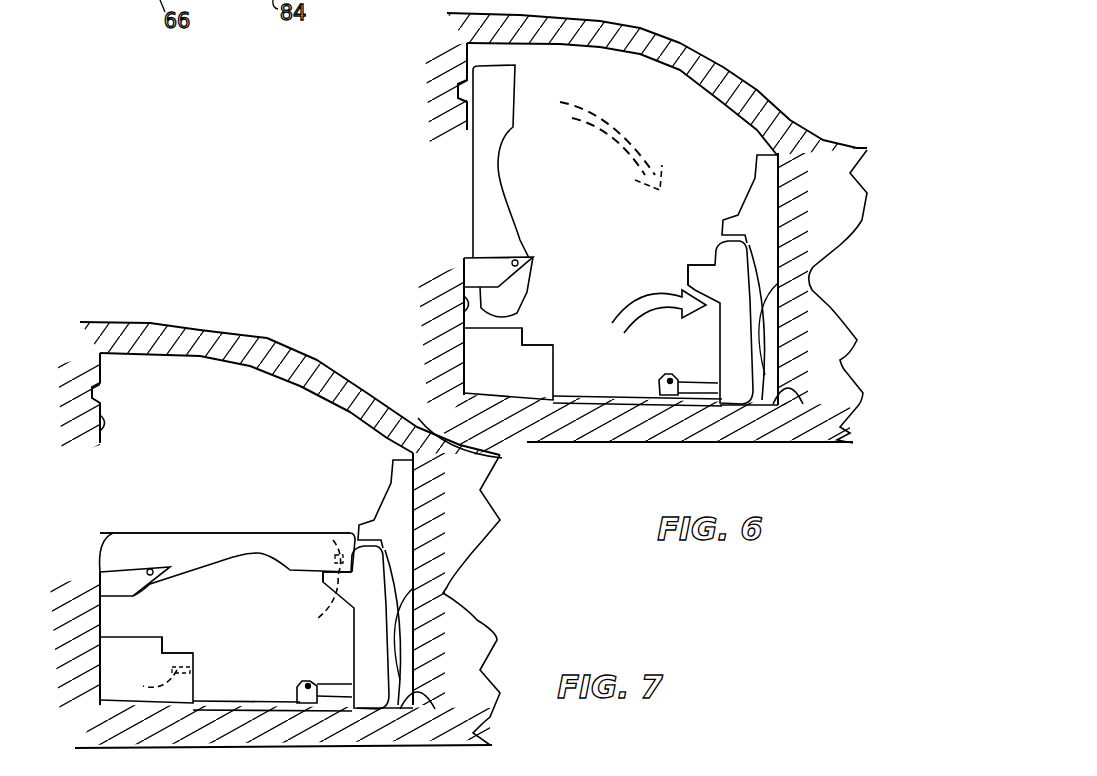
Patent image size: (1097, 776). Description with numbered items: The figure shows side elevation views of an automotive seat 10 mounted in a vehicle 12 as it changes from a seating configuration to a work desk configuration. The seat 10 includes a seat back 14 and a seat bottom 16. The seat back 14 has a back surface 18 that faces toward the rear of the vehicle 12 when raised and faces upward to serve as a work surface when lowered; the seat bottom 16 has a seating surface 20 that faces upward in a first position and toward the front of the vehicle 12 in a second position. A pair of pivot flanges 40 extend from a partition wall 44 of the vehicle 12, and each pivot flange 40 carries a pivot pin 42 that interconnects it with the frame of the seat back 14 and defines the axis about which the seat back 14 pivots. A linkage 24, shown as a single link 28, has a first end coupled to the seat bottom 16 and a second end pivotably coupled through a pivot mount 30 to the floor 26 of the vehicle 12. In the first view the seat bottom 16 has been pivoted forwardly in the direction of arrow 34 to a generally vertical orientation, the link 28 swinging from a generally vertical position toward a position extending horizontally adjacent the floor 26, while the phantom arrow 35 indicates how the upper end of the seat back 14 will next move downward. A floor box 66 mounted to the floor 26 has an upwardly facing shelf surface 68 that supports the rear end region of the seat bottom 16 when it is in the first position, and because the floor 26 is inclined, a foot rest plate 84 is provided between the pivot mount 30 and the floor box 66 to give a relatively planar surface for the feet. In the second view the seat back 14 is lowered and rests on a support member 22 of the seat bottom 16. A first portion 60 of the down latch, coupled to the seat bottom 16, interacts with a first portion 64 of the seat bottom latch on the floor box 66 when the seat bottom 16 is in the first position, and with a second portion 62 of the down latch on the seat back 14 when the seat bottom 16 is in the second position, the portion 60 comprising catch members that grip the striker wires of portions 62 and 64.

In FIG. 6, the automotive seat 10 is at (526, 96).
In FIG. 7, the automotive seat 10 is at (231, 514).
In FIG. 6, the vehicle 12 is at (747, 82).
In FIG. 7, the vehicle 12 is at (147, 328).
In FIG. 6, the seat back 14 is at (511, 206).
In FIG. 7, the seat back 14 is at (275, 532).
In FIG. 6, the seat bottom 16 is at (737, 330).
In FIG. 7, the seat bottom 16 is at (365, 656).
In FIG. 6, the back surface 18 is at (473, 188).
In FIG. 7, the back surface 18 is at (193, 532).
In FIG. 6, the seating surface 20 is at (783, 360).
In FIG. 7, the seating surface 20 is at (395, 642).
In FIG. 6, the support member 22 is at (686, 270).
In FIG. 7, the support member 22 is at (321, 582).
In FIG. 6, the linkage 24 is at (662, 370).
In FIG. 6, the floor 26 is at (790, 406).
In FIG. 7, the floor 26 is at (447, 707).
In FIG. 6, the link 28 is at (702, 372).
In FIG. 7, the link 28 is at (342, 683).
In FIG. 6, the pivot mount 30 is at (658, 380).
In FIG. 7, the pivot mount 30 is at (300, 683).
In FIG. 6, the arrow 34 is at (632, 318).
In FIG. 6, the phantom arrow 35 is at (623, 130).
In FIG. 6, the pivot flange 40 is at (495, 268).
In FIG. 7, the pivot flange 40 is at (122, 577).
In FIG. 6, the pivot pin 42 is at (518, 260).
In FIG. 7, the pivot pin 42 is at (150, 569).
In FIG. 6, the partition wall 44 is at (462, 300).
In FIG. 7, the partition wall 44 is at (100, 423).
In FIG. 7, the first portion of down latch 60 is at (320, 612).
In FIG. 7, the second portion of down latch 62 is at (333, 540).
In FIG. 7, the first portion of seat bottom latch 64 is at (172, 685).
In FIG. 6, the floor box 66 is at (556, 368).
In FIG. 7, the floor box 66 is at (116, 636).
In FIG. 6, the shelf surface 68 is at (541, 344).
In FIG. 7, the shelf surface 68 is at (185, 652).
In FIG. 6, the foot rest plate 84 is at (632, 406).
In FIG. 7, the foot rest plate 84 is at (248, 700).